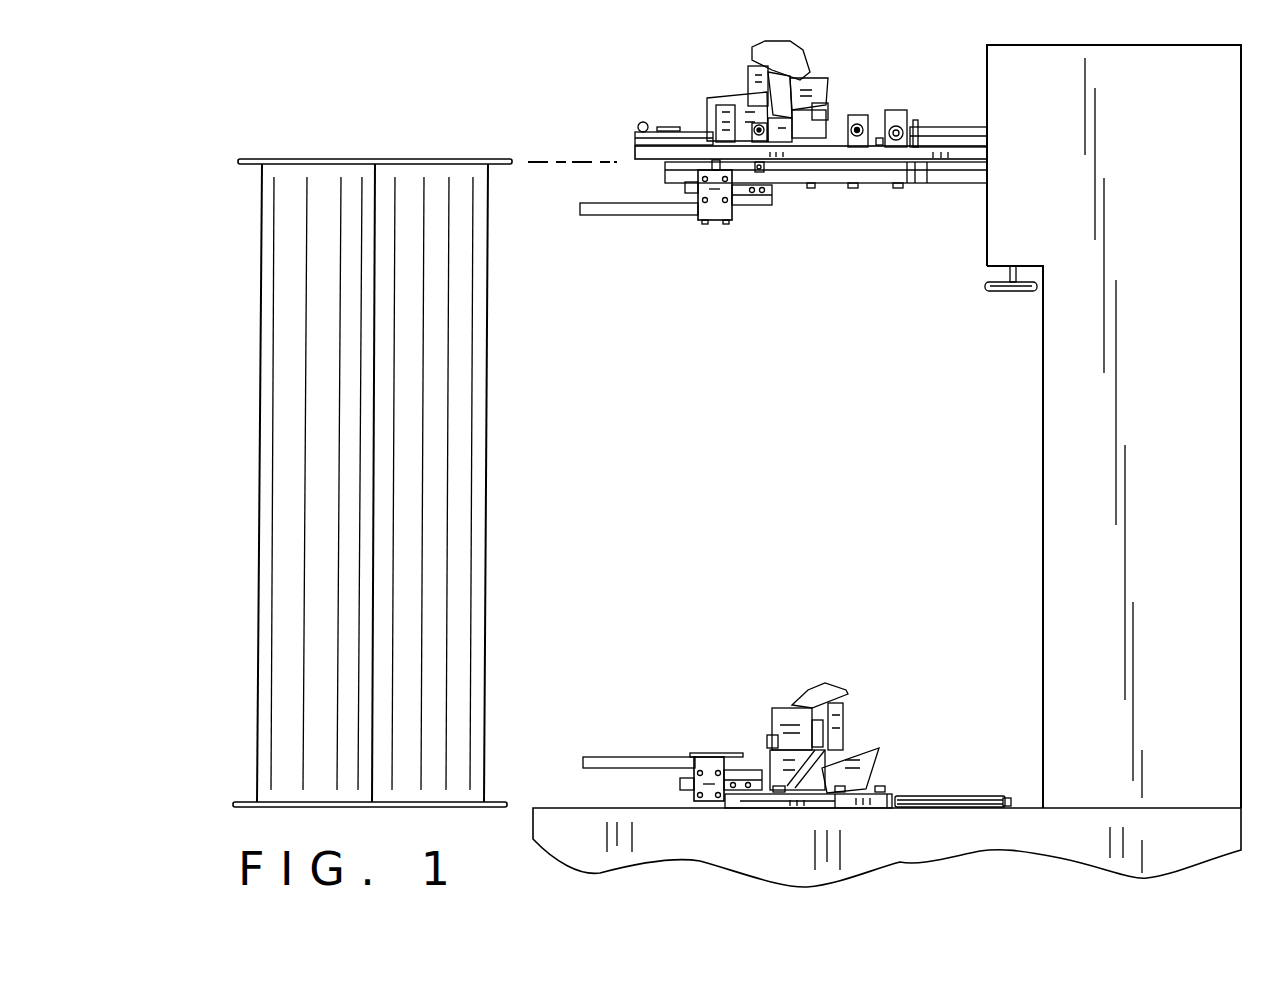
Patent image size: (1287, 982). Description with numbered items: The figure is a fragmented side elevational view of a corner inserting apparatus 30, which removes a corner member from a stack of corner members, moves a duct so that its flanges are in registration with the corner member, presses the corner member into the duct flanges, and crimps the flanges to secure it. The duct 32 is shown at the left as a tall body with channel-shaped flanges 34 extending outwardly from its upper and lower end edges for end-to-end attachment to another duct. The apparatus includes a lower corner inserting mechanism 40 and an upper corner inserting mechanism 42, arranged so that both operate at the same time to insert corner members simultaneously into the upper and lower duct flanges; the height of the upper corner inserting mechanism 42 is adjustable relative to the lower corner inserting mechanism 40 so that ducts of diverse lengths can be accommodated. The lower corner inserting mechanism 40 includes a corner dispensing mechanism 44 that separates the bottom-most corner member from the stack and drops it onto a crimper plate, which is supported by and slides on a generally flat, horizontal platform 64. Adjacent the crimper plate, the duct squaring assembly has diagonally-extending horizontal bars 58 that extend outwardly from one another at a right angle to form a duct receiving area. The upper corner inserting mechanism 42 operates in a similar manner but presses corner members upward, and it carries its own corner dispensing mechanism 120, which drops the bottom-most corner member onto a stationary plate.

The corner inserting apparatus 30 is at (584, 126).
The duct 32 is at (495, 470).
The channel-shaped flanges 34 is at (342, 158).
The lower corner inserting mechanism 40 is at (916, 709).
The upper corner inserting mechanism 42 is at (849, 215).
The corner dispensing mechanism 44 is at (793, 697).
The diagonally-extending horizontal bars 58 is at (634, 757).
The horizontal platform 64 is at (567, 806).
The corner dispensing mechanism 120 is at (740, 62).